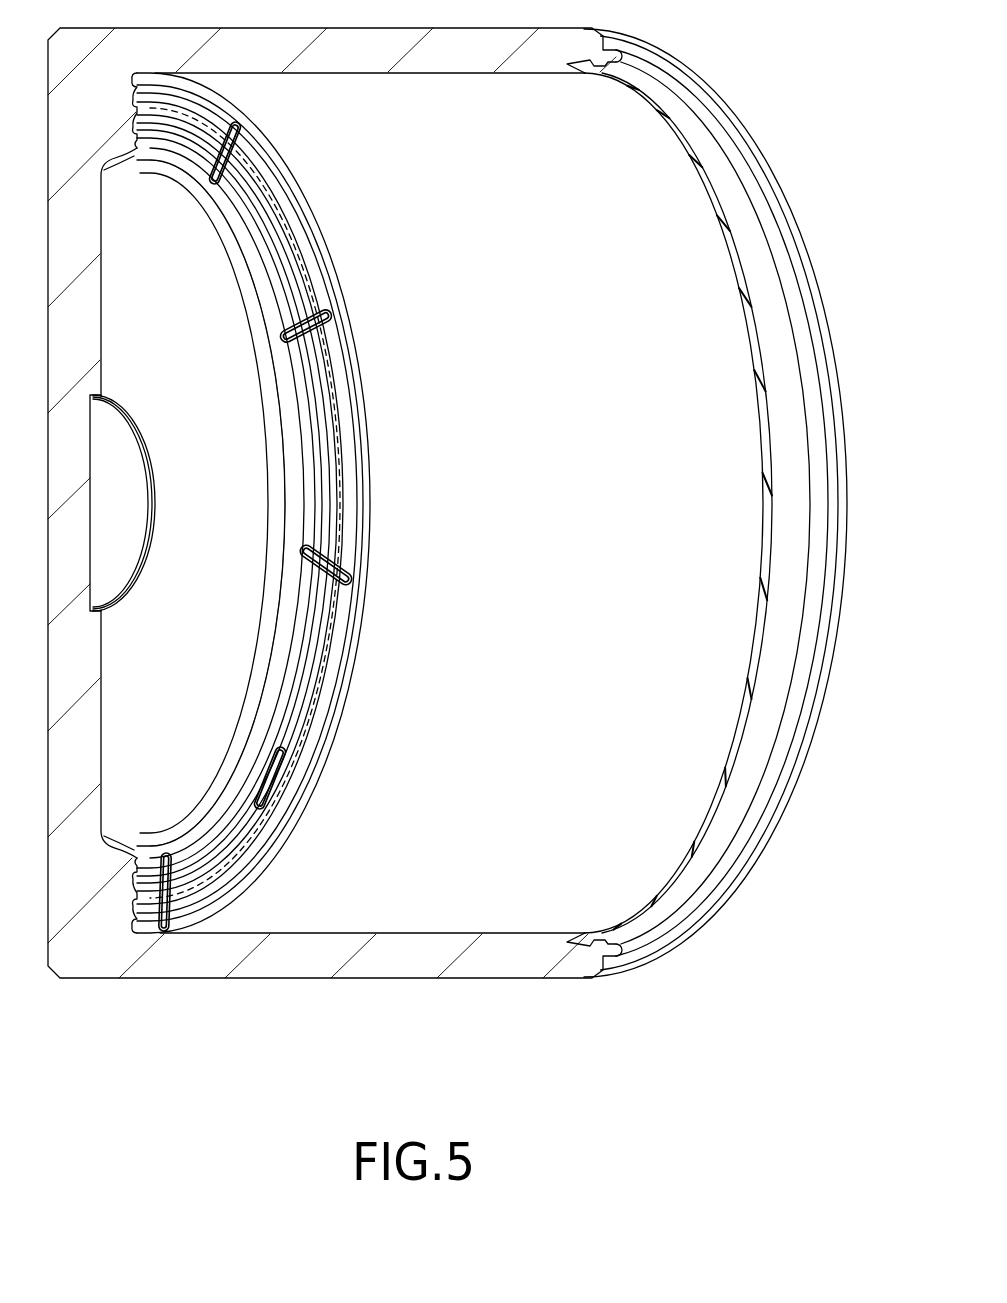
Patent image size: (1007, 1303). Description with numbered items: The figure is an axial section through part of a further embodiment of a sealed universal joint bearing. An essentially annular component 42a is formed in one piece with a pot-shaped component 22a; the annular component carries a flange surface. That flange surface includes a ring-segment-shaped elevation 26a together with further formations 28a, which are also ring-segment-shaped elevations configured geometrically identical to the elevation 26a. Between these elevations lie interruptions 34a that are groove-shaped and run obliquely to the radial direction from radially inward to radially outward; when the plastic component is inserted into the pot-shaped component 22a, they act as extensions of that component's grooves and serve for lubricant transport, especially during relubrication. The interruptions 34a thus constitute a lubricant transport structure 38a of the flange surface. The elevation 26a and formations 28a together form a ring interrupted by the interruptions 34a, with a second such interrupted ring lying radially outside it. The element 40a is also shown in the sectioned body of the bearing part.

The pot-shaped component 22a is at (470, 958).
The body / frame section 40a is at (313, 970).
The annular component 42a is at (118, 900).
The elevation 26a is at (155, 133).
The formations 28a is at (272, 245).
The interruptions 34a is at (225, 173).
The lubricant transport structure 38a is at (329, 526).